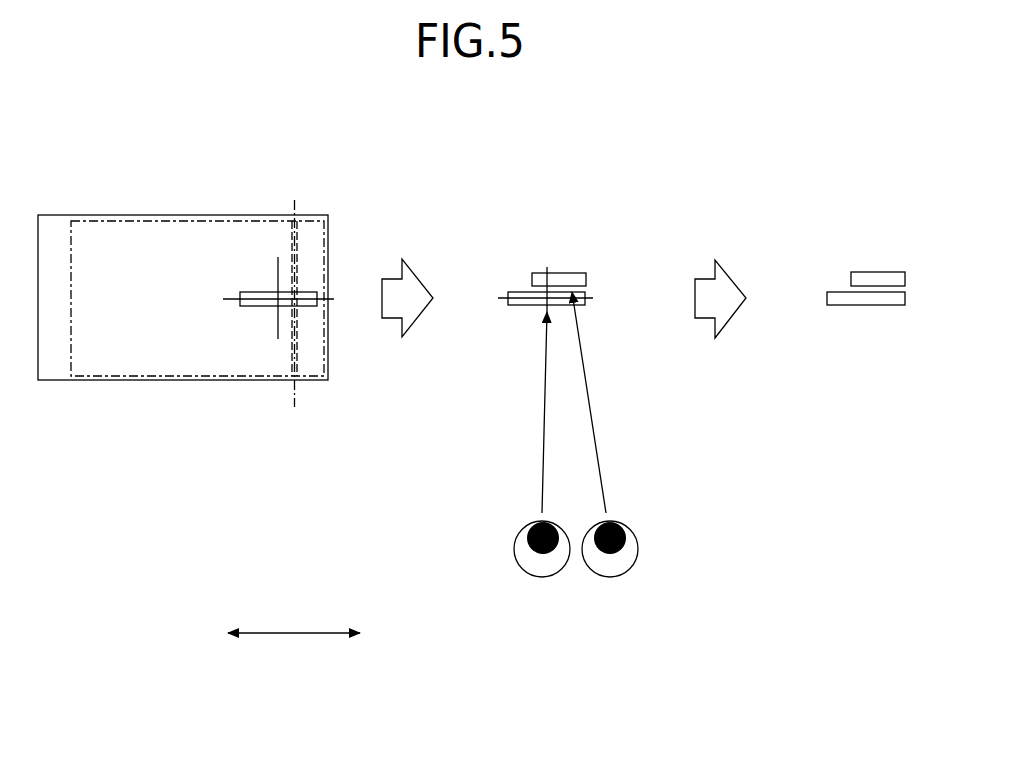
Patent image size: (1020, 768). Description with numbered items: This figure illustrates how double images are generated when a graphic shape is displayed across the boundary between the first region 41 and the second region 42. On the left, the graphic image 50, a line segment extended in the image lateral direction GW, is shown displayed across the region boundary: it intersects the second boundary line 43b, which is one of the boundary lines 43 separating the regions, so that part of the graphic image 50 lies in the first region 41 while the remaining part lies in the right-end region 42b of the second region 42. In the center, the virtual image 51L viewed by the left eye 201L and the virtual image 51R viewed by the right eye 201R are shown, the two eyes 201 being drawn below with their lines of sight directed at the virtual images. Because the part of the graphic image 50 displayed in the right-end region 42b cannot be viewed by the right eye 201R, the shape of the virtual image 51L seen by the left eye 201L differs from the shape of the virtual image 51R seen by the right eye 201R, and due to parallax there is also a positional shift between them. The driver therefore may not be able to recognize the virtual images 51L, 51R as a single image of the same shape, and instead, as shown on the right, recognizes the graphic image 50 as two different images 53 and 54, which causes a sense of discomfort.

The first region 41 is at (258, 231).
The second region 42 is at (352, 277).
The right-end region 42b is at (310, 252).
The boundary line 43 is at (306, 254).
The second boundary line 43b is at (289, 188).
The graphic image 50 is at (248, 291).
The virtual image viewed by the left eye 51L is at (518, 292).
The virtual image viewed by the right eye 51R is at (572, 273).
The first different image 53 is at (838, 292).
The second different image 54 is at (890, 272).
The eyes of the driver 201 is at (581, 599).
The left eye 201L is at (536, 577).
The right eye 201R is at (614, 578).
The image lateral direction GW is at (294, 619).